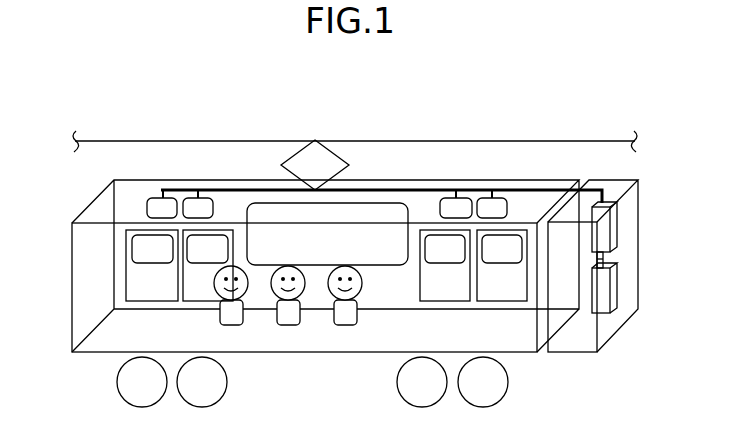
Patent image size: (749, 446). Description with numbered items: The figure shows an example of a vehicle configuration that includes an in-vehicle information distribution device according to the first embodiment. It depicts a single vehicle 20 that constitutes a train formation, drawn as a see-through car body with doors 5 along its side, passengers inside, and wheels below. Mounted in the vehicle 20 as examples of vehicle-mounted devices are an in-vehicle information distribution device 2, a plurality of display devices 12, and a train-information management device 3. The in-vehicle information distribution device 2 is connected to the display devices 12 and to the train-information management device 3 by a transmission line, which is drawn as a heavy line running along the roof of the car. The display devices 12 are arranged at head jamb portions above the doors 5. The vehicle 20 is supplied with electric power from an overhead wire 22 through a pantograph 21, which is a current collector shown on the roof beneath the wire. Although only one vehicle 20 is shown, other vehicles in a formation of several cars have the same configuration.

The vehicle 20 is at (72, 318).
The door 5 is at (138, 275).
The display device 12 is at (147, 208).
The pantograph 21 is at (344, 155).
The overhead wire 22 is at (474, 138).
The in-vehicle information distribution device 2 is at (606, 230).
The train-information management device 3 is at (606, 290).